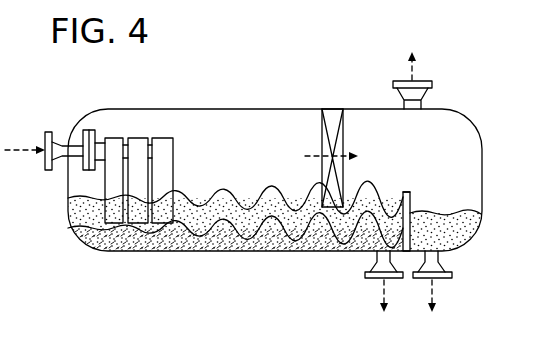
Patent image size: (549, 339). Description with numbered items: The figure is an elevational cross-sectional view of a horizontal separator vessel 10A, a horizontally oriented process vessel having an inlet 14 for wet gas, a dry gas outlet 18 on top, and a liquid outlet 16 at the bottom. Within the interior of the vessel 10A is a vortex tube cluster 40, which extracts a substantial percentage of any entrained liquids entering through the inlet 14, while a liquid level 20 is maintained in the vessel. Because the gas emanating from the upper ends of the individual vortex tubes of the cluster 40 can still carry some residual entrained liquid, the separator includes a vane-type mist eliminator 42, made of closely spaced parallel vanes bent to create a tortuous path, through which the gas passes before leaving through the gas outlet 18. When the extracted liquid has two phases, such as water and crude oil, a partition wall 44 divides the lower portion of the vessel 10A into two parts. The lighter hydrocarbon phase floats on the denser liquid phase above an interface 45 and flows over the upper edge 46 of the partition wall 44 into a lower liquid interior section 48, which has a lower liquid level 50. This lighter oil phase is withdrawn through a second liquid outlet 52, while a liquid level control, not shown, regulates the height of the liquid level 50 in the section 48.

The horizontal separator vessel 10A is at (224, 109).
The inlet 14 is at (44, 147).
The liquid outlet 16 is at (373, 278).
The dry gas outlet 18 is at (416, 77).
The liquid level 20 is at (208, 196).
The vortex tube cluster 40 is at (200, 151).
The vane-type mist eliminator 42 is at (338, 133).
The partition wall 44 is at (405, 221).
The interface 45 is at (236, 224).
The upper edge 46 is at (408, 192).
The lower liquid interior section 48 is at (455, 228).
The lower liquid level 50 is at (440, 212).
The second liquid outlet 52 is at (443, 258).